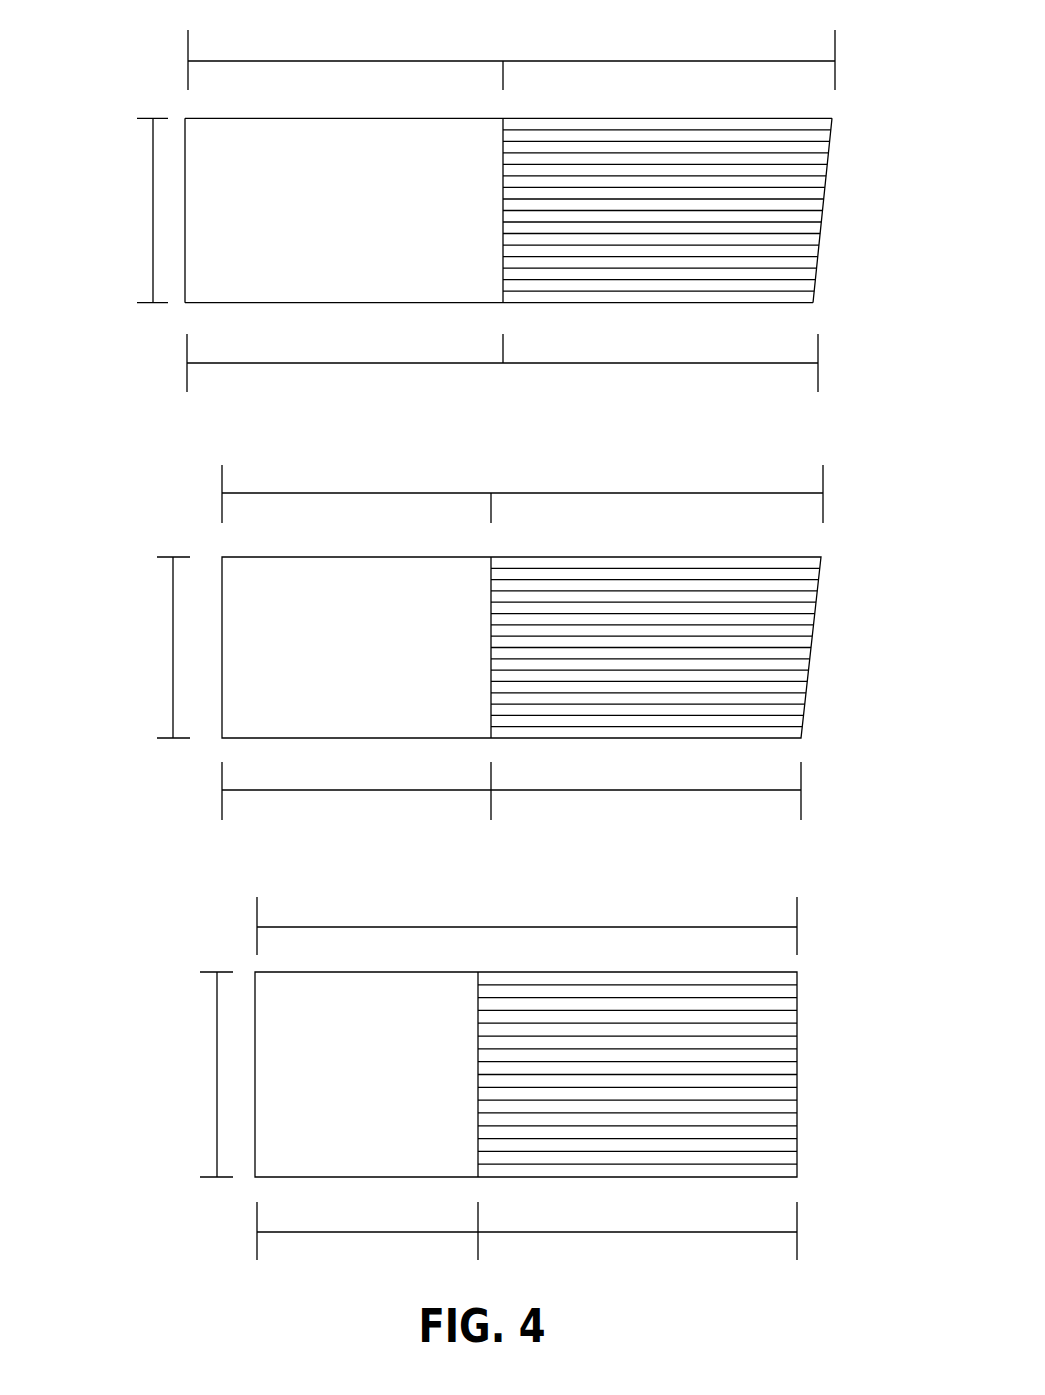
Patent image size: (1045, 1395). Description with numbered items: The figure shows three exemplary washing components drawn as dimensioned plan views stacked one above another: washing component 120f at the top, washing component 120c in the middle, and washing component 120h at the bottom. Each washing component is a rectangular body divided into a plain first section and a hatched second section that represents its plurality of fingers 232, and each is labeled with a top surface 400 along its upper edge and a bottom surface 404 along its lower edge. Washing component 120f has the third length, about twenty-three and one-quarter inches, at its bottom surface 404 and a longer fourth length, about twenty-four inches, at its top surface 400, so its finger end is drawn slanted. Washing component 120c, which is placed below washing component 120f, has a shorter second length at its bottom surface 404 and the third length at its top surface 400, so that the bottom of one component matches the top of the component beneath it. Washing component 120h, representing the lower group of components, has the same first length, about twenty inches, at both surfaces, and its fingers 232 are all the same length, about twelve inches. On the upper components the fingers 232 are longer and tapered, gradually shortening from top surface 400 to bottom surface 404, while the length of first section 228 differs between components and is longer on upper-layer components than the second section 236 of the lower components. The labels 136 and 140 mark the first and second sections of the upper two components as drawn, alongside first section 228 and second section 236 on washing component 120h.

The washing component 120f is at (140, 58).
The washing component 120c is at (152, 493).
The washing component 120h is at (193, 930).
The top surface 400 is at (792, 119).
The bottom surface 404 is at (792, 303).
The plurality of fingers 232 is at (812, 195).
The first section 136 is at (344, 471).
The second section 140 is at (661, 470).
The first section 228 is at (366, 1119).
The second section 236 is at (637, 1124).